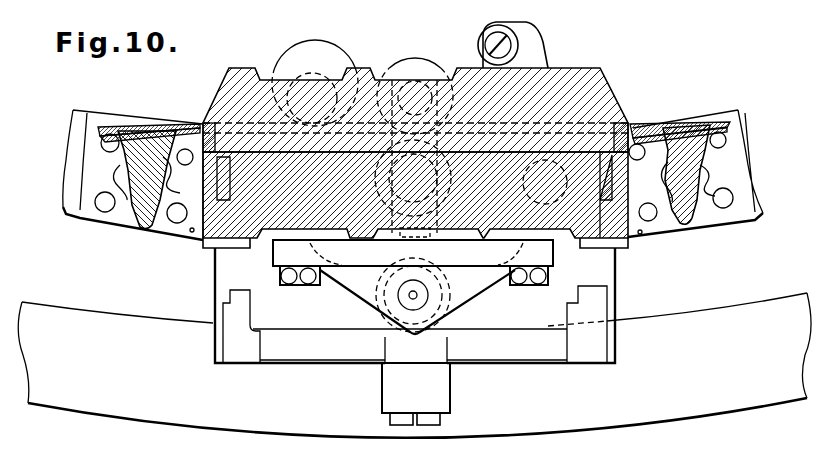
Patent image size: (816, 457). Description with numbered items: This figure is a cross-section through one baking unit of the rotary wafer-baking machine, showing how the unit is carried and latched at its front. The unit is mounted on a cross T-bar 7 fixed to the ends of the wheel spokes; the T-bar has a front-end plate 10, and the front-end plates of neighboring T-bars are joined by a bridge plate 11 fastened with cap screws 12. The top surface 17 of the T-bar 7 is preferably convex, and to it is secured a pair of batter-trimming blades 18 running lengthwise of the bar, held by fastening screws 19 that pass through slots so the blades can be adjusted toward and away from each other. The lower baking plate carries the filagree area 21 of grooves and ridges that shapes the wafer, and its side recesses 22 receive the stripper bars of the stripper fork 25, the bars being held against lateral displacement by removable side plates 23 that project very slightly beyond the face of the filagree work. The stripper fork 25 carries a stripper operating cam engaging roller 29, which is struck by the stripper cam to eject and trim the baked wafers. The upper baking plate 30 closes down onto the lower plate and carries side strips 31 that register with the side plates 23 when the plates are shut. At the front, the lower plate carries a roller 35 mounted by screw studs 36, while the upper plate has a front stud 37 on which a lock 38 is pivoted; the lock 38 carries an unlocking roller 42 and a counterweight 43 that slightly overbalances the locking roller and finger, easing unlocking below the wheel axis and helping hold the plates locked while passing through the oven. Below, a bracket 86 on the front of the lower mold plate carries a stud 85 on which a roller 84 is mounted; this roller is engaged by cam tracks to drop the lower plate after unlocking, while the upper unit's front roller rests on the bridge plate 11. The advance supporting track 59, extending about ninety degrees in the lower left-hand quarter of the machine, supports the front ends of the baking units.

The cross T-bar 7 is at (130, 227).
The front-end plate 10 is at (84, 218).
The bridge plate 11 is at (224, 254).
The cap screw 12 is at (95, 202).
The top surface 17 is at (160, 128).
The batter-trimming blade 18 is at (101, 143).
The fastening screw 19 is at (134, 124).
The filagree area 21 is at (170, 216).
The side recess 22 is at (243, 190).
The side plate 23 is at (192, 231).
The stripper fork 25 is at (542, 350).
The stripper operating cam engaging roller 29 is at (392, 389).
The upper baking plate 30 is at (596, 72).
The side strip 31 is at (206, 128).
The roller 35 is at (437, 176).
The screw stud 36 is at (347, 243).
The front stud 37 is at (313, 68).
The lock 38 is at (403, 63).
The unlocking roller 42 is at (400, 58).
The counterweight 43 is at (503, 173).
The advance supporting track 59 is at (753, 400).
The roller 84 is at (436, 316).
The stud 85 is at (413, 295).
The bracket 86 is at (350, 288).